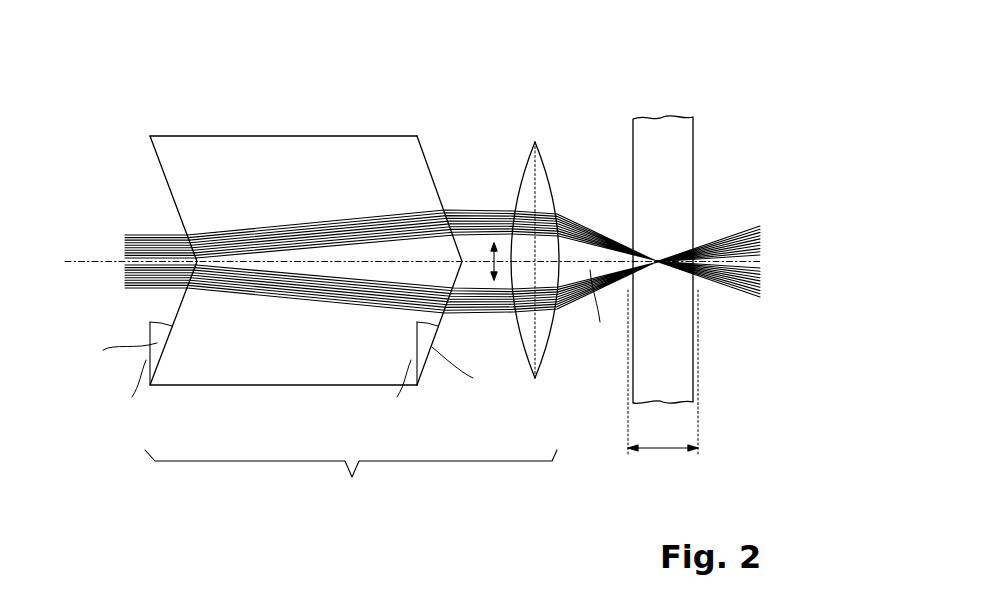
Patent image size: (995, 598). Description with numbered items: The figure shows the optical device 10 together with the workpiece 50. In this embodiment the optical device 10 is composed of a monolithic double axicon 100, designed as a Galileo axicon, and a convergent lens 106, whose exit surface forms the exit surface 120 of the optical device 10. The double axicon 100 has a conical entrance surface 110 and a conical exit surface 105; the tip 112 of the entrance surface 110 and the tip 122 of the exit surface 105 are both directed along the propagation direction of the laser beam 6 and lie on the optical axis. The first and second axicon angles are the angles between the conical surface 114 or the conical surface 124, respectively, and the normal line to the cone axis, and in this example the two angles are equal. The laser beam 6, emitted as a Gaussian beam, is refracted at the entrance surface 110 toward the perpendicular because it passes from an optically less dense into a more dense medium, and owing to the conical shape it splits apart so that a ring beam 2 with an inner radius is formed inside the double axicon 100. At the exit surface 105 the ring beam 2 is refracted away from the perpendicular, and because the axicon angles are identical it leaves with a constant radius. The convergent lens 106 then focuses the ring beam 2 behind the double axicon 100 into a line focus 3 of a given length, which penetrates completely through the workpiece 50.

The monolithic double axicon 100 is at (404, 103).
The conical entrance surface 110 is at (162, 172).
The conical surface 114 is at (176, 313).
The tip of the entrance surface 112 is at (206, 284).
The conical exit surface 105 is at (435, 182).
The conical surface 124 is at (441, 322).
The tip of the exit surface 122 is at (463, 256).
The laser beam 6 is at (152, 243).
The ring beam 2 is at (385, 216).
The convergent lens 106 is at (554, 192).
The exit surface of the optical device 120 is at (553, 340).
The workpiece 50 is at (653, 158).
The line focus 3 is at (673, 247).
The optical device 10 is at (352, 480).